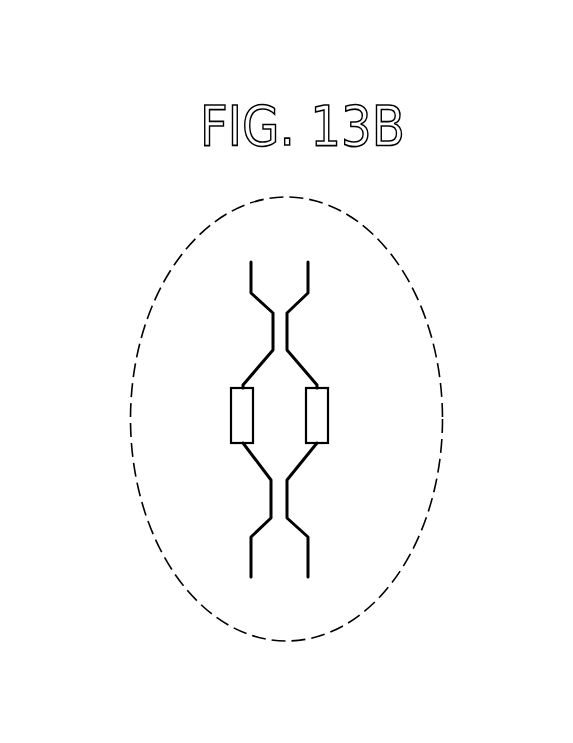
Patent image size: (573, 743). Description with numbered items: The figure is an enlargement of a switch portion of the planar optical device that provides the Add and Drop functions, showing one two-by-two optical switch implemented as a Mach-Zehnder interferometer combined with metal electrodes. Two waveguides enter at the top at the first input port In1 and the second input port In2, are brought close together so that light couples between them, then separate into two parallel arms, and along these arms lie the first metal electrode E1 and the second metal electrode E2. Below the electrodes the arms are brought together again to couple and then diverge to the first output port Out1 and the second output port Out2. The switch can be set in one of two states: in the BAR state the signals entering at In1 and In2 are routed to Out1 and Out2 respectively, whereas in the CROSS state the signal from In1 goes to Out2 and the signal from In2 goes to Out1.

The first input port In1 is at (253, 307).
The second input port In2 is at (311, 307).
The first metal electrode E1 is at (217, 415).
The second metal electrode E2 is at (336, 415).
The first output port Out1 is at (251, 527).
The second output port Out2 is at (318, 527).